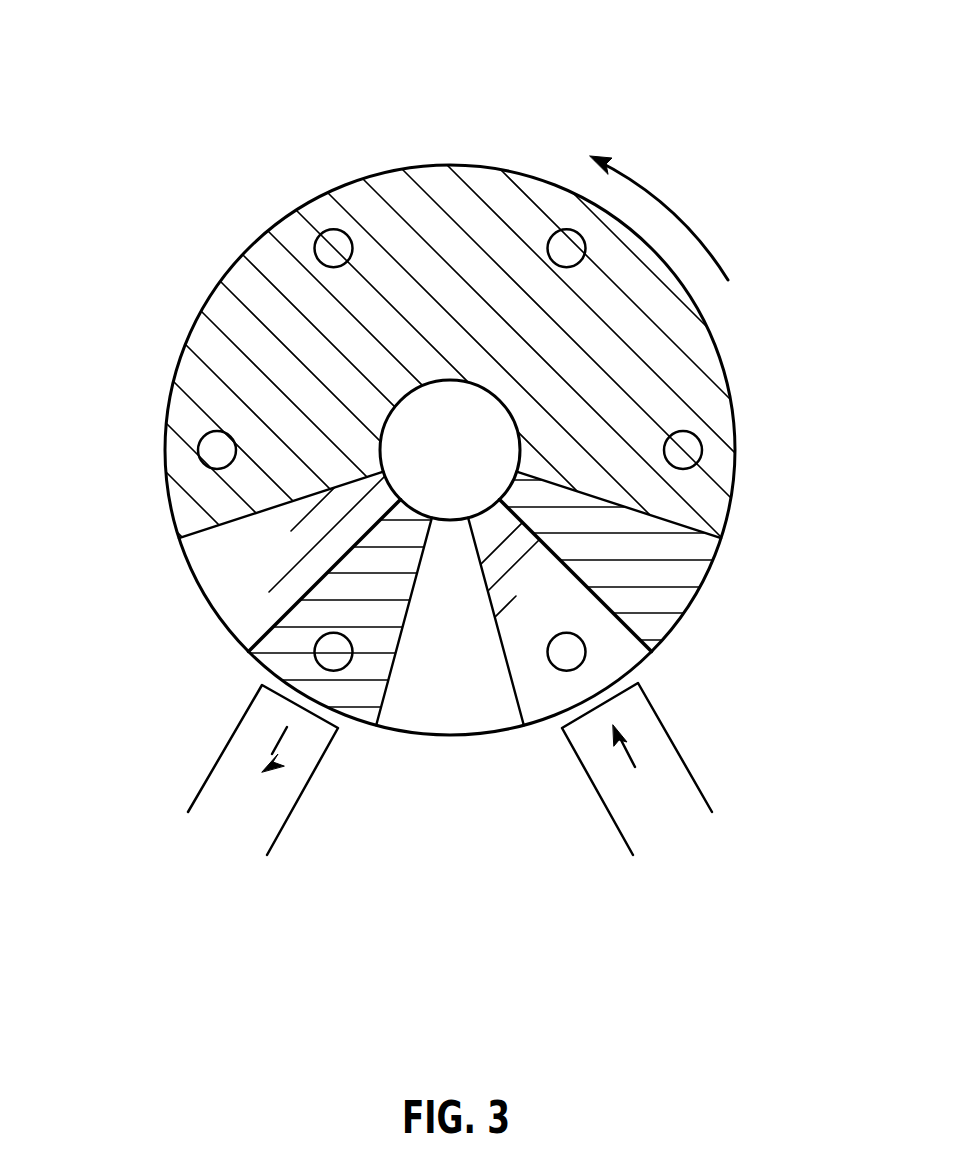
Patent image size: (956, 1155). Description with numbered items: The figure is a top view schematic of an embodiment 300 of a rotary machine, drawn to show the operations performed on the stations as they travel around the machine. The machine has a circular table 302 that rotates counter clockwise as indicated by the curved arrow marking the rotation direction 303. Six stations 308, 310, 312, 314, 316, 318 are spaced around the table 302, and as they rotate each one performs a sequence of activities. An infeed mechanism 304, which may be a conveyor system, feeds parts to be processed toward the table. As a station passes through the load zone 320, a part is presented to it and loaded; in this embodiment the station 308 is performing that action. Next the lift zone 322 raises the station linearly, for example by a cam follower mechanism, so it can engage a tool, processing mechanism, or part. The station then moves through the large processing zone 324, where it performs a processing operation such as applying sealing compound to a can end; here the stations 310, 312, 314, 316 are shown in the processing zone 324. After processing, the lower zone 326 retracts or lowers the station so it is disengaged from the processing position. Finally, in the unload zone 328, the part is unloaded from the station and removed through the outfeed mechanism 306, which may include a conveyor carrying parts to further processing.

The embodiment 300 is at (455, 559).
The table 302 is at (712, 337).
The rotation direction 303 is at (653, 195).
The infeed mechanism 304 is at (705, 798).
The outfeed mechanism 306 is at (196, 770).
The station 308 is at (584, 662).
The station 310 is at (700, 453).
The station 312 is at (551, 237).
The station 314 is at (313, 248).
The station 316 is at (203, 438).
The station 318 is at (314, 658).
The load zone 320 is at (538, 717).
The lift zone 322 is at (687, 592).
The processing zone 324 is at (433, 192).
The lower zone 326 is at (197, 573).
The unload zone 328 is at (362, 708).